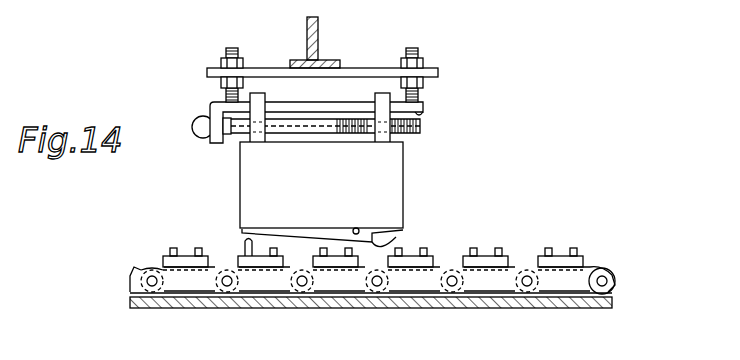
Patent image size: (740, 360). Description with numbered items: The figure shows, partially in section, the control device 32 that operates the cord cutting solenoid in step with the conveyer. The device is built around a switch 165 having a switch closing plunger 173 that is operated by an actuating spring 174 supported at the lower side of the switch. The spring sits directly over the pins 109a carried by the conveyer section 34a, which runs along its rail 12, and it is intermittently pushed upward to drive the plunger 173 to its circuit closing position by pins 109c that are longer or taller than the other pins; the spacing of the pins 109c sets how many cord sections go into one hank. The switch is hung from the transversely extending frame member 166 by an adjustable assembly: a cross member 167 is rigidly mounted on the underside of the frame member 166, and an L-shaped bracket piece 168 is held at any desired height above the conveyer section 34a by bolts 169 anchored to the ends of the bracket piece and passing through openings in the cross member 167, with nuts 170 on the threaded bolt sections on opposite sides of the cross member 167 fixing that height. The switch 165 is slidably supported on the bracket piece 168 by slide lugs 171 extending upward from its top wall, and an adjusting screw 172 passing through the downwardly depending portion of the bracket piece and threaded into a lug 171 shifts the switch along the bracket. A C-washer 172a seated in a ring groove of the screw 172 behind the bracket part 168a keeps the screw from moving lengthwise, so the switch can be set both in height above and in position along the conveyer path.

The conveyor rail 12 is at (552, 308).
The control device 32 is at (365, 35).
The conveyer section 34a is at (566, 270).
The pins 109a is at (499, 248).
The pins of greater length 109c is at (245, 240).
The switch 165 is at (403, 170).
The frame member 166 is at (306, 33).
The cross member 167 is at (385, 68).
The L-shaped bracket piece 168 is at (316, 98).
The bracket part 168a is at (213, 139).
The bolts 169 is at (224, 96).
The nuts 170 is at (221, 82).
The slide lugs 171 is at (265, 93).
The adjusting screw 172 is at (424, 130).
The C-washer 172a is at (229, 140).
The switch closing plunger 173 is at (366, 227).
The actuating spring 174 is at (397, 238).